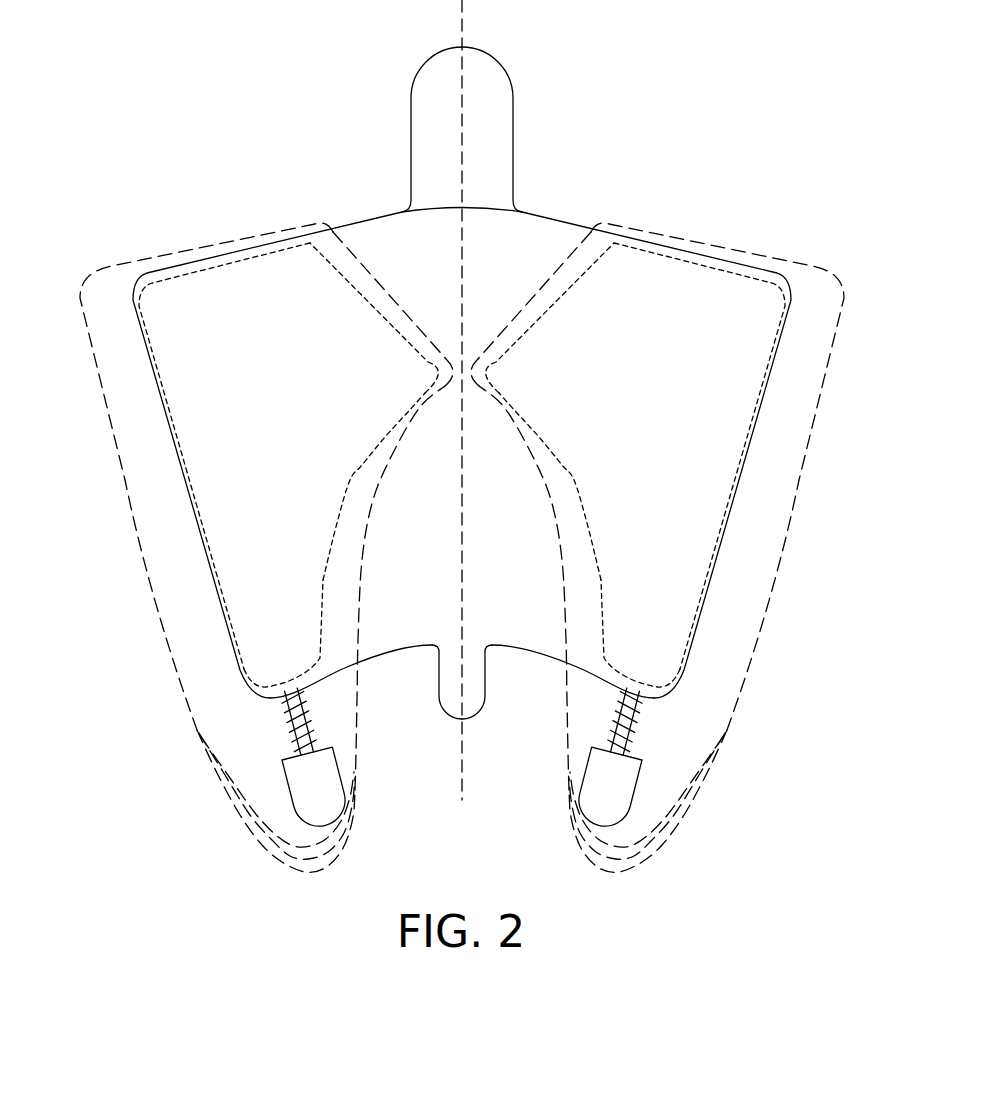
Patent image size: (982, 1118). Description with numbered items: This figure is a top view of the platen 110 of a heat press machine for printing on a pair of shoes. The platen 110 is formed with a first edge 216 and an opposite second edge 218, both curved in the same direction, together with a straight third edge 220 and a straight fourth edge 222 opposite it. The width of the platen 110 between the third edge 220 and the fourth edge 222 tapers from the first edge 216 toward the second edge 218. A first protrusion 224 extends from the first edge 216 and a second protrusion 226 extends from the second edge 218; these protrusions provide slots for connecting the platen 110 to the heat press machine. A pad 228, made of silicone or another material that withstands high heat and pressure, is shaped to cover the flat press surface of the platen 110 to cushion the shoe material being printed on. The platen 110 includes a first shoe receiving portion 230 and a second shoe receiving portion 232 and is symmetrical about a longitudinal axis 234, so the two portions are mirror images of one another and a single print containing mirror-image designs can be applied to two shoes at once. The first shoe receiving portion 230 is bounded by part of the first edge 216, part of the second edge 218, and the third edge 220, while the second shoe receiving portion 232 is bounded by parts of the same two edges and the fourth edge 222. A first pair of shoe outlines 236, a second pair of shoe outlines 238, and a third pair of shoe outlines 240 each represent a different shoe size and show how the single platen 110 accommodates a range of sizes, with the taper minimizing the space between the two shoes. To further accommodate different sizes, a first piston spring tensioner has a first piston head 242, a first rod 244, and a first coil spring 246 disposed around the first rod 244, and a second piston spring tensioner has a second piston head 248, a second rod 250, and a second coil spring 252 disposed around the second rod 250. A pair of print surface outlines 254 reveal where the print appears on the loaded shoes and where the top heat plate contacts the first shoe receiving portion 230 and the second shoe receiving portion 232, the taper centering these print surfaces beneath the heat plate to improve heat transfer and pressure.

The platen 110 is at (735, 207).
The first edge 216 is at (556, 222).
The second edge 218 is at (538, 653).
The third edge 220 is at (170, 435).
The fourth edge 222 is at (754, 435).
The first protrusion 224 is at (497, 60).
The second protrusion 226 is at (448, 716).
The pad 228 is at (385, 238).
The first shoe receiving portion 230 is at (180, 398).
The second shoe receiving portion 232 is at (744, 398).
The longitudinal axis 234 is at (463, 28).
The first pair of shoe outlines 236 is at (268, 836).
The second pair of shoe outlines 238 is at (293, 858).
The third pair of shoe outlines 240 is at (315, 874).
The first piston head 242 is at (238, 760).
The first rod 244 is at (299, 722).
The first coil spring 246 is at (297, 775).
The second piston head 248 is at (687, 760).
The second rod 250 is at (625, 722).
The second coil spring 252 is at (627, 775).
The print surface outlines 254 is at (263, 683).